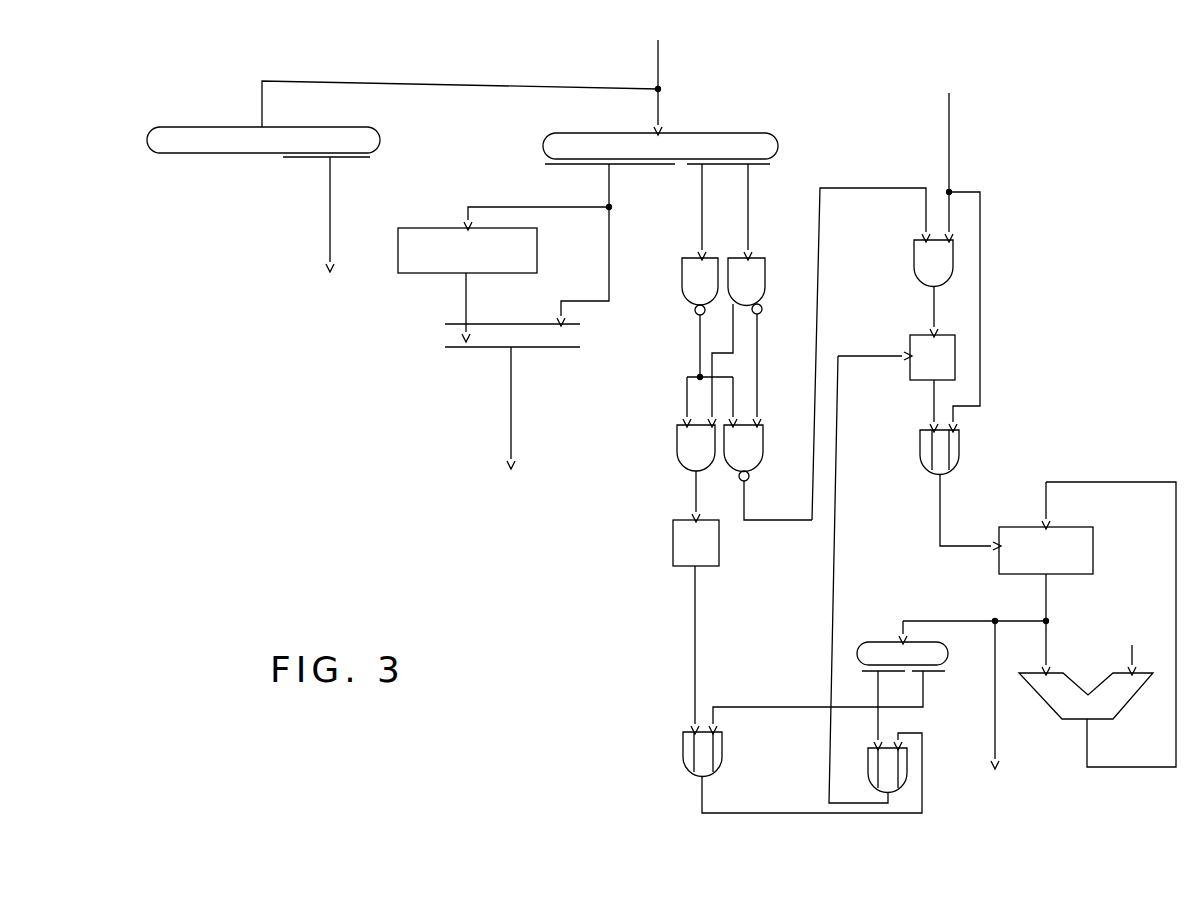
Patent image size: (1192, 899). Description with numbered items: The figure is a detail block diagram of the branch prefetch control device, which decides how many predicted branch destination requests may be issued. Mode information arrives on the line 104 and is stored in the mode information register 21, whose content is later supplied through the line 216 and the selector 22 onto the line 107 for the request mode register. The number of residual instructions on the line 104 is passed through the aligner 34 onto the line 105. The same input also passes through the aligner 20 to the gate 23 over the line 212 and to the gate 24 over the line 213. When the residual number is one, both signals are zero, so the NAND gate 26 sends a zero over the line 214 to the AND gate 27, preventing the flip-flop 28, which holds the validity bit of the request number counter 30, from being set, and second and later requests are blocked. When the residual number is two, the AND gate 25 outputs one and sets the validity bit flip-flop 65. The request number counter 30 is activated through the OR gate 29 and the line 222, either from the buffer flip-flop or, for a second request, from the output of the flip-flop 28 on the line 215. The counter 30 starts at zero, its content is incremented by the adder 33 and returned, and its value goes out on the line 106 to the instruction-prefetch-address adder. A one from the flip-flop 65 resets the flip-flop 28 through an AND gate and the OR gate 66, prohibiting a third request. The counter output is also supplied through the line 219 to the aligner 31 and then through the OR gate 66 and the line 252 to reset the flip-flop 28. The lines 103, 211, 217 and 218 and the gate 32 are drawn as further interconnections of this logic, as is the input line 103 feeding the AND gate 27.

The aligner 34 is at (380, 141).
The aligner 20 is at (778, 147).
The line 104 is at (660, 103).
The input line 103 is at (949, 131).
The line 105 is at (330, 215).
The line 107 is at (511, 411).
The line 106 is at (995, 741).
The mode information register 21 is at (537, 256).
The line 211 is at (609, 196).
The line 212 is at (702, 221).
The line 213 is at (748, 221).
The line 214 is at (819, 231).
The line 215 is at (930, 411).
The line 216 is at (466, 302).
The line 217 is at (695, 626).
The line 218 is at (923, 700).
The line 219 is at (930, 618).
The line 222 is at (940, 516).
The line 252 is at (834, 552).
The selector 22 is at (580, 338).
The gate 23 is at (682, 272).
The gate 24 is at (765, 275).
The AND gate 25 is at (677, 441).
The NAND gate 26 is at (763, 448).
The AND gate 27 is at (914, 260).
The flip-flop 28 is at (910, 338).
The OR gate 29 is at (959, 449).
The request number counter 30 is at (1093, 551).
The aligner 31 is at (880, 642).
The AND gate 32 is at (683, 750).
The +1 adder 33 is at (1113, 673).
The flip-flop 65 is at (673, 546).
The OR gate 66 is at (868, 765).